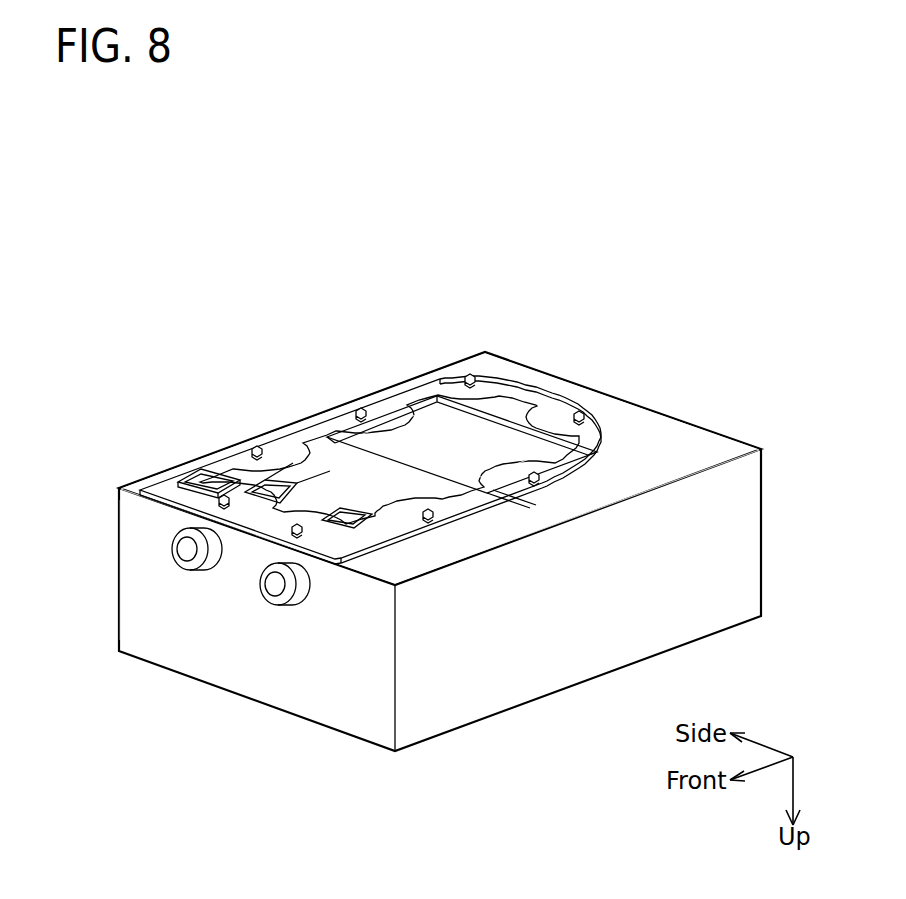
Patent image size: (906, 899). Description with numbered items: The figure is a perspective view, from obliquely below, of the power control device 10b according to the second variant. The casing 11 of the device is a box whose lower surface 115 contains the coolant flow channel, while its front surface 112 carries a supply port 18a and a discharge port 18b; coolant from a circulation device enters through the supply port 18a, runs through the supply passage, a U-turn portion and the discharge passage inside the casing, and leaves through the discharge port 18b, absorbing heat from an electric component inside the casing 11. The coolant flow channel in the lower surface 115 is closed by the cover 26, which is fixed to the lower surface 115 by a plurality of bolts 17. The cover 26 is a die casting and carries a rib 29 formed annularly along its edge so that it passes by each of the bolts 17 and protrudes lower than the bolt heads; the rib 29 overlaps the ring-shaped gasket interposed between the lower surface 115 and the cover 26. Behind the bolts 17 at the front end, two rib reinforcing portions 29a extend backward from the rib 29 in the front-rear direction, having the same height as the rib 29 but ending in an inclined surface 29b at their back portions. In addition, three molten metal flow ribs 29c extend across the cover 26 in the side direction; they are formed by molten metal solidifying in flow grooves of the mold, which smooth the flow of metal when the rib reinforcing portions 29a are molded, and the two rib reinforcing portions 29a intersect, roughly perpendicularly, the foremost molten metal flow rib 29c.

The power control device 10b is at (119, 360).
The casing 11 is at (735, 580).
The lower surface 115 is at (678, 447).
The front surface 112 is at (145, 556).
The bolt 17 is at (222, 498).
The supply port 18a is at (183, 557).
The discharge port 18b is at (280, 590).
The cover 26 is at (430, 437).
The rib 29 is at (543, 380).
The rib reinforcing portion 29a is at (232, 490).
The inclined surface 29b is at (258, 478).
The molten metal flow rib 29c is at (300, 468).